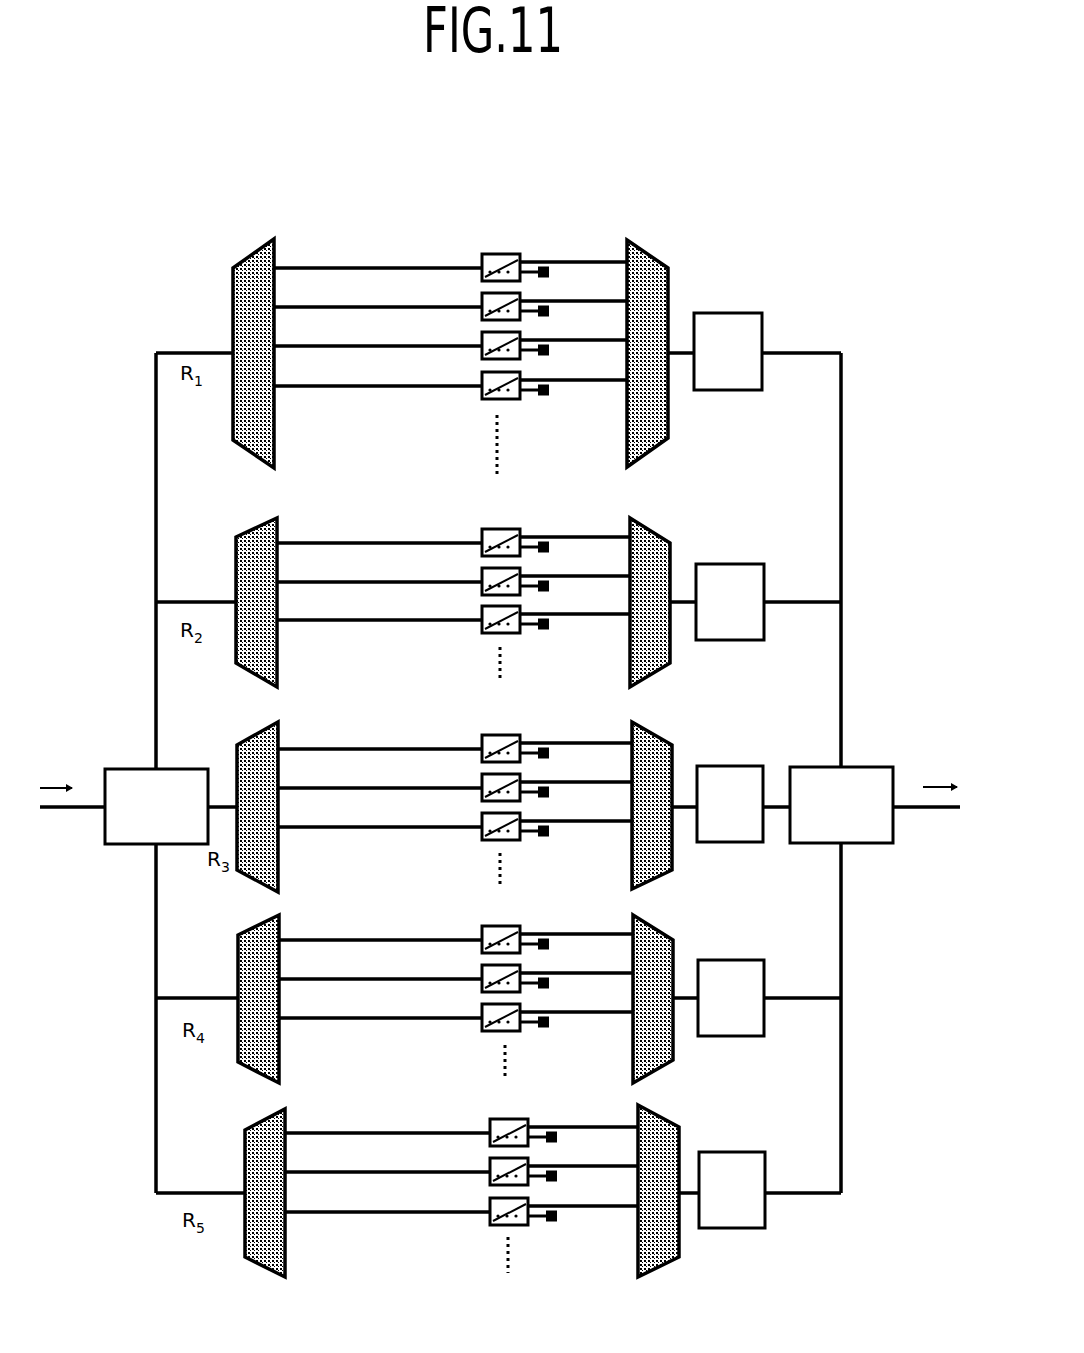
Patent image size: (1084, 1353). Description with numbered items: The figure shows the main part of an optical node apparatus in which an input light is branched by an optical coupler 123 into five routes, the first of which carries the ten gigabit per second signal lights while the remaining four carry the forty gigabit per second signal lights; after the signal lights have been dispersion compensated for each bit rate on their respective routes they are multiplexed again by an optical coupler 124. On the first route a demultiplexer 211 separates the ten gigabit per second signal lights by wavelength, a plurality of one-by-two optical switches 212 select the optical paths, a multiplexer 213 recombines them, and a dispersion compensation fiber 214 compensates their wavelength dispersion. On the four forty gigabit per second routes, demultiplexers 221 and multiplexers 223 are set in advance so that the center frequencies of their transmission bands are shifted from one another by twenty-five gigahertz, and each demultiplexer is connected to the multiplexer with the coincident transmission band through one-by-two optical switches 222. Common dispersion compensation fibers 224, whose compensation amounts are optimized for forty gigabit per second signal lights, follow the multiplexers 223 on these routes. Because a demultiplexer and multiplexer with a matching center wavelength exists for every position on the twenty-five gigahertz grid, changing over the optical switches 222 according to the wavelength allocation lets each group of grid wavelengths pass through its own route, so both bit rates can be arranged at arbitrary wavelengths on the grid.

The optical coupler 123 is at (125, 769).
The optical coupler 124 is at (865, 767).
The demultiplexer 211 is at (233, 295).
The 1×2 optical switches 212 is at (491, 246).
The multiplexer 213 is at (670, 302).
The dispersion compensation fiber 214 is at (757, 313).
The demultiplexers 221 is at (236, 557).
The 1×2 optical switches 222 is at (491, 517).
The multiplexers 223 is at (672, 560).
The dispersion compensation fibers 224 is at (762, 564).